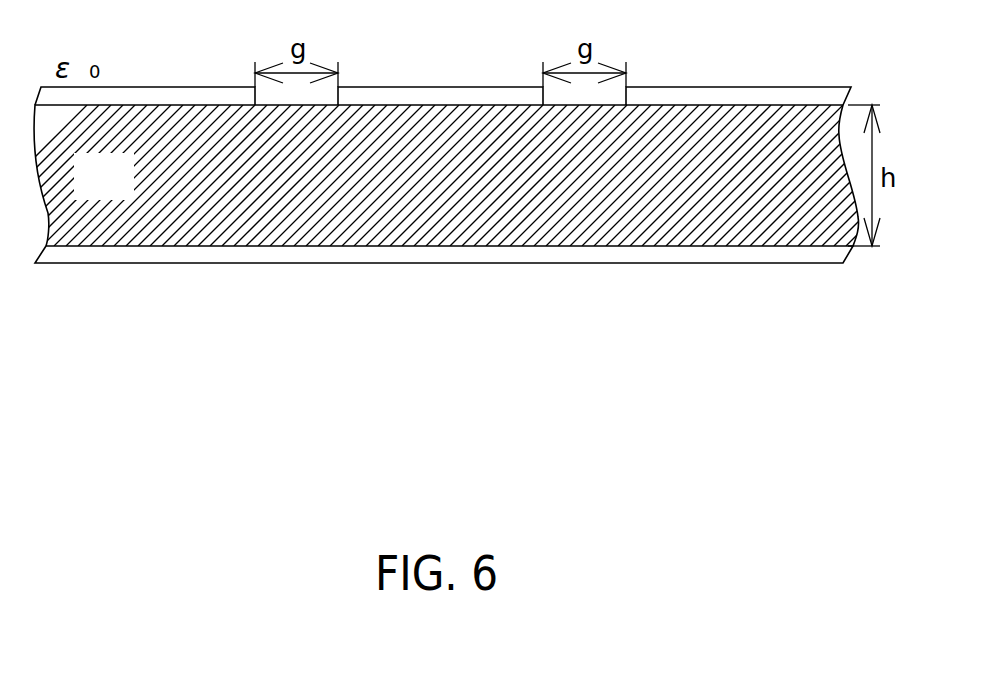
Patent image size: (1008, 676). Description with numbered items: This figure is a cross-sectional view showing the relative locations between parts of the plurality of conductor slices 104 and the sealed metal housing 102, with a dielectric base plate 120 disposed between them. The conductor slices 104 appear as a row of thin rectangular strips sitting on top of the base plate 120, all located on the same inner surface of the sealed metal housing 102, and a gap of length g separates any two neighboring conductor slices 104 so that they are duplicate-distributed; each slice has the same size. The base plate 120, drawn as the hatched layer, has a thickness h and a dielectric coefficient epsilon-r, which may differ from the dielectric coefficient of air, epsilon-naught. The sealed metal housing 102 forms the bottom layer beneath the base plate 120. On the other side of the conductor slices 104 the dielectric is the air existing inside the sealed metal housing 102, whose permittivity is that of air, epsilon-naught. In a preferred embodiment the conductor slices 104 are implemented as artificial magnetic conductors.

The conductor slices 104 is at (145, 98).
The base plate 120 is at (448, 228).
The sealed metal housing 102 is at (693, 250).